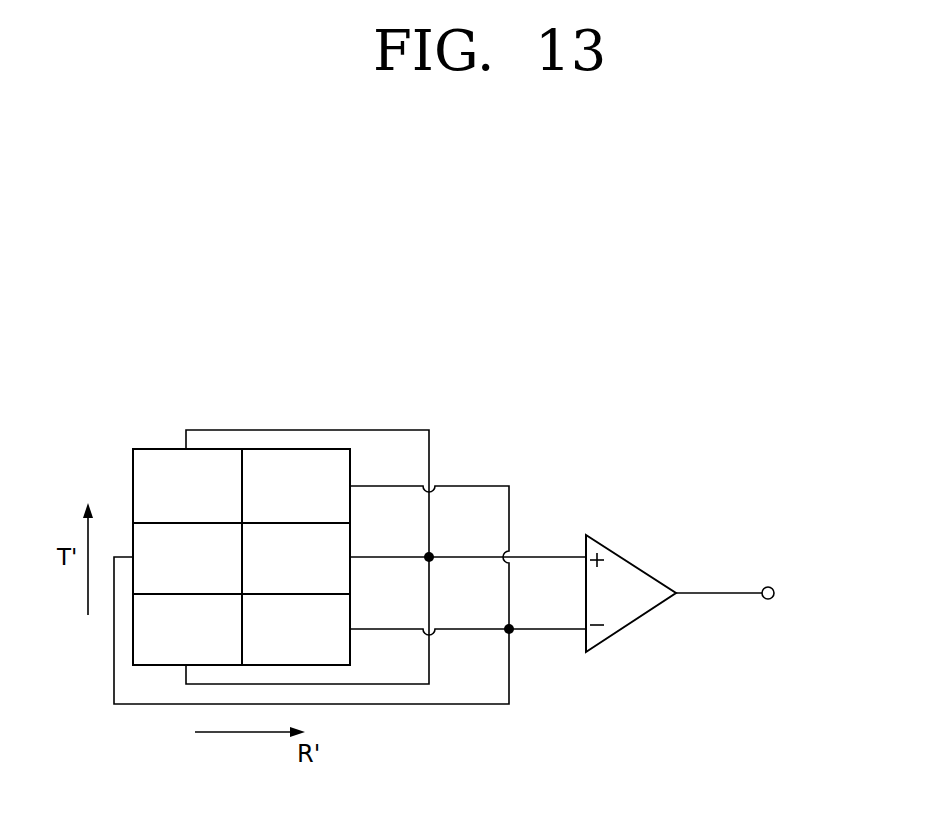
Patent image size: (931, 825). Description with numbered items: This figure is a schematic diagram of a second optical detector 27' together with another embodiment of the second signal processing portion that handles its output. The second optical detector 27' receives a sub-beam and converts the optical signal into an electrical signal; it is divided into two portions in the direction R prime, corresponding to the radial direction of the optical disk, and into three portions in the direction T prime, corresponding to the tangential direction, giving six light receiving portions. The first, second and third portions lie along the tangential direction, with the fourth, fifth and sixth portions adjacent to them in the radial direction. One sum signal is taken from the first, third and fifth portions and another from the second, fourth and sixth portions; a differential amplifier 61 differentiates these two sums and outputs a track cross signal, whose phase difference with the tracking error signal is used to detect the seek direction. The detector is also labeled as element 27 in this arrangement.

The sensor pixel array 27 is at (314, 524).
The second optical detector 27' is at (314, 524).
The differential amplifier 61 is at (625, 570).